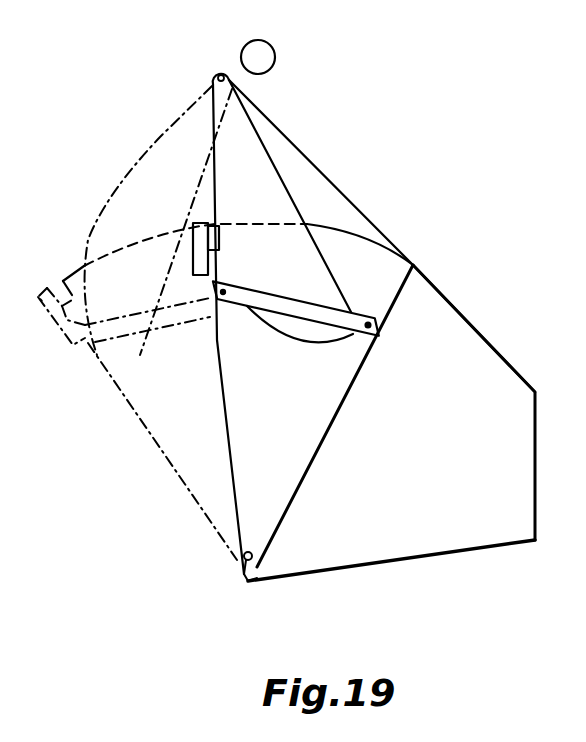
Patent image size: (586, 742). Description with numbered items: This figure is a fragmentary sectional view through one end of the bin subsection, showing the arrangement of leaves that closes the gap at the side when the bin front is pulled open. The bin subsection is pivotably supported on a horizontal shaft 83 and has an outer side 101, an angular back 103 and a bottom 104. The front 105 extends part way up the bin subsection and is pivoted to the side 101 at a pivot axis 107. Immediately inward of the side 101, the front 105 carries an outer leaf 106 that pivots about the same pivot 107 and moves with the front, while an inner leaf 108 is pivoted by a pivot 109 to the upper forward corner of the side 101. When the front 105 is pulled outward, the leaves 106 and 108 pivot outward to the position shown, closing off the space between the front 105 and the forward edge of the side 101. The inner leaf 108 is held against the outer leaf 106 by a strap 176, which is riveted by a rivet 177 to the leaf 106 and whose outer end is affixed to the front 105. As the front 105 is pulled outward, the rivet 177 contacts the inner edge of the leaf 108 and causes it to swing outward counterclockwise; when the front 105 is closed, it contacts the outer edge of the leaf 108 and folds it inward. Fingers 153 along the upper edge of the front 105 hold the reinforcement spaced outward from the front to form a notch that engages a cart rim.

The horizontal shaft 83 is at (275, 52).
The outer side 101 is at (389, 423).
The angular back 103 is at (432, 287).
The bottom 104 is at (375, 568).
The front 105 is at (218, 406).
The outer leaf 106 is at (328, 416).
The pivot axis 107 is at (256, 578).
The inner leaf 108 is at (318, 196).
The pivot 109 is at (214, 71).
The finger 153 is at (197, 226).
The strap 176 is at (282, 297).
The rivet 177 is at (378, 334).